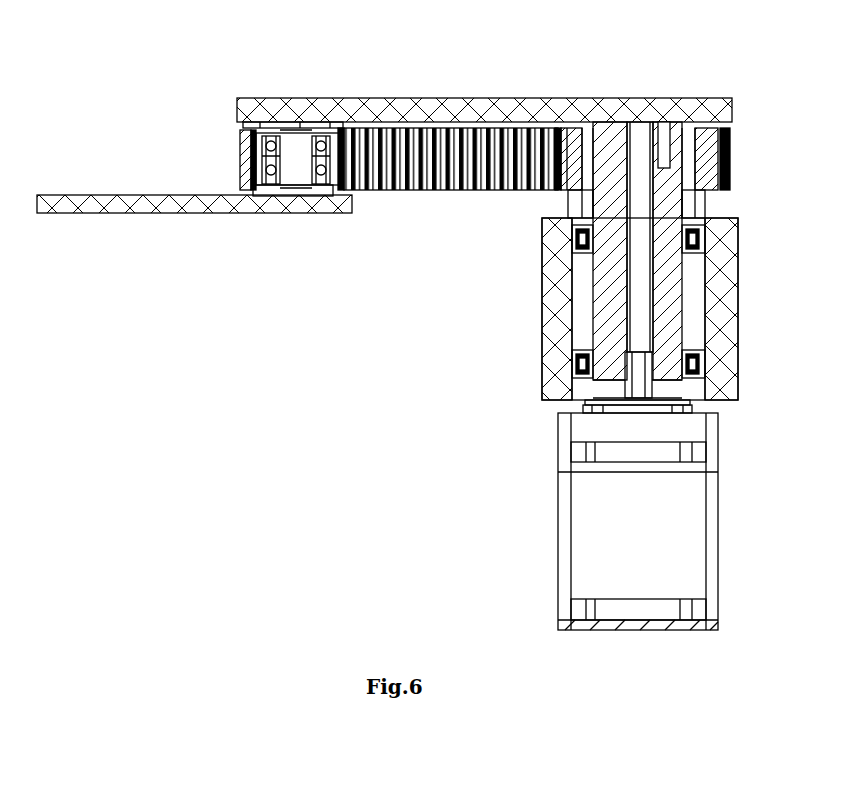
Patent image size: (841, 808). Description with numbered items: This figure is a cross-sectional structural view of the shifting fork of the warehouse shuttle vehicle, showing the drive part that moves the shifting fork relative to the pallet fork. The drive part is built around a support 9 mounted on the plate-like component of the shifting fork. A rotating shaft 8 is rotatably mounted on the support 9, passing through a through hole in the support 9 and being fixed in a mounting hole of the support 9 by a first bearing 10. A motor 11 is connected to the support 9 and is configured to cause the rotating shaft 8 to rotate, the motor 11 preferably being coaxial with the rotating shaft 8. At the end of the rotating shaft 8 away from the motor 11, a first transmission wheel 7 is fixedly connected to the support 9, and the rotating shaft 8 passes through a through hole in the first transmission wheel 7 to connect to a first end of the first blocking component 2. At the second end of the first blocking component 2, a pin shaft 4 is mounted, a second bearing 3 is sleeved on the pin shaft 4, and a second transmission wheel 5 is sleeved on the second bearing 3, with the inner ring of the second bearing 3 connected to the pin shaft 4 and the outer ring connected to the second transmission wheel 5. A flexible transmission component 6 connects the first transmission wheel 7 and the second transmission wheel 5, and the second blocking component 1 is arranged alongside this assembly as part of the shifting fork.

The second blocking component 1 is at (128, 203).
The first blocking component 2 is at (396, 112).
The second bearing 3 is at (237, 138).
The pin shaft 4 is at (292, 140).
The second transmission wheel 5 is at (333, 135).
The flexible transmission component 6 is at (470, 142).
The first transmission wheel 7 is at (572, 149).
The rotating shaft 8 is at (616, 148).
The support 9 is at (553, 245).
The first bearing 10 is at (578, 372).
The motor 11 is at (603, 508).